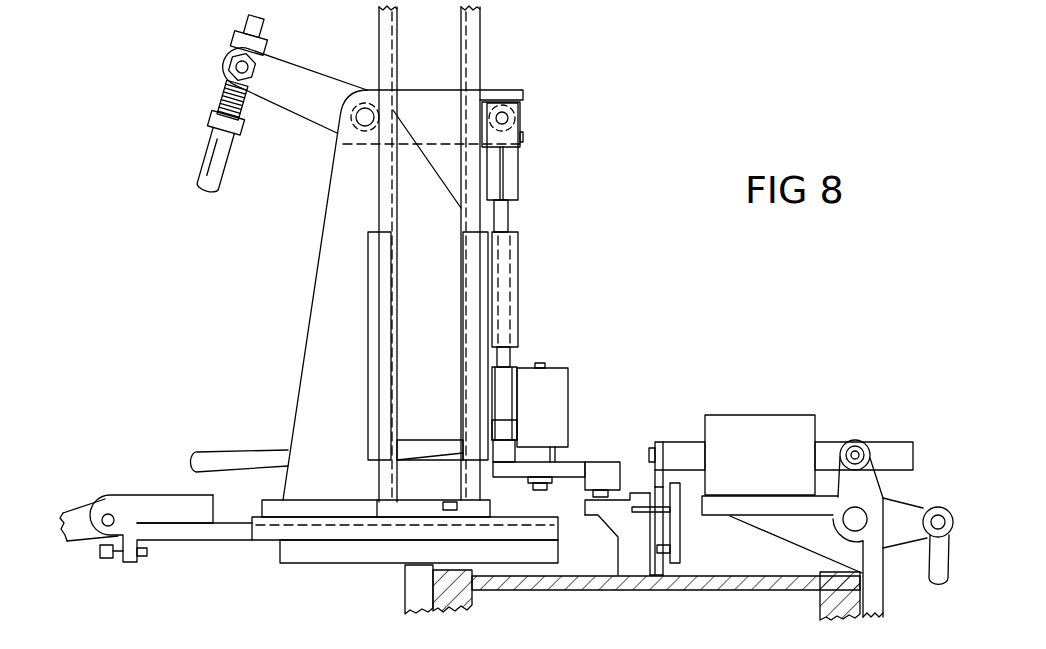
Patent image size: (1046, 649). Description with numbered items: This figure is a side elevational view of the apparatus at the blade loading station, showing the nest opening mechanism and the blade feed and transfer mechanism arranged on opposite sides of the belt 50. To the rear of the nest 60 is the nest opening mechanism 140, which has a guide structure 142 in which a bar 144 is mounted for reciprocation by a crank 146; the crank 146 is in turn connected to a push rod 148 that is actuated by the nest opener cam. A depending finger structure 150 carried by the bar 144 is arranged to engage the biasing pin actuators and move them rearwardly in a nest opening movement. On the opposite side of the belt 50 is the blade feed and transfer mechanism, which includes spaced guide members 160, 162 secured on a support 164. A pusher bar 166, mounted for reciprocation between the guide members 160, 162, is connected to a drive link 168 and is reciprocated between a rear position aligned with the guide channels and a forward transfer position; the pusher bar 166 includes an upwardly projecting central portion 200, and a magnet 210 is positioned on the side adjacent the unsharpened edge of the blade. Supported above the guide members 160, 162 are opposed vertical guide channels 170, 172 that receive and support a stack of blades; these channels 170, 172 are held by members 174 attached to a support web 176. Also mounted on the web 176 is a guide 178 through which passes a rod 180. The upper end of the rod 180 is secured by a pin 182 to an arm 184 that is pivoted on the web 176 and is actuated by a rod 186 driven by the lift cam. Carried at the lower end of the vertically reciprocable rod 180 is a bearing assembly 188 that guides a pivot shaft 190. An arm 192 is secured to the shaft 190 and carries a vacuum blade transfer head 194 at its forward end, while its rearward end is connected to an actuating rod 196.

The belt 50 is at (696, 590).
The nest 60 is at (614, 565).
The nest opening mechanism 140 is at (812, 409).
The guide structure 142 is at (754, 415).
The bar 144 is at (687, 442).
The crank 146 is at (885, 480).
The push rod 148 is at (928, 560).
The depending finger structure 150 is at (647, 497).
The guide member 160 is at (120, 637).
The guide member 162 is at (252, 517).
The support 164 is at (295, 553).
The pusher bar 166 is at (198, 538).
The drive link 168 is at (80, 537).
The vertical guide channel 170 is at (380, 27).
The vertical guide channel 172 is at (481, 30).
The members 174 is at (370, 303).
The support web 176 is at (312, 318).
The guide 178 is at (513, 278).
The rod 180 is at (505, 222).
The pin 182 is at (510, 118).
The arm 184 is at (313, 110).
The rod 186 is at (211, 145).
The bearing assembly 188 is at (560, 394).
The pivot shaft 190 is at (546, 365).
The arm 192 is at (573, 464).
The vacuum blade transfer head 194 is at (600, 465).
The actuating rod 196 is at (225, 452).
The upwardly projecting central portion 200 is at (308, 502).
The magnet 210 is at (450, 502).